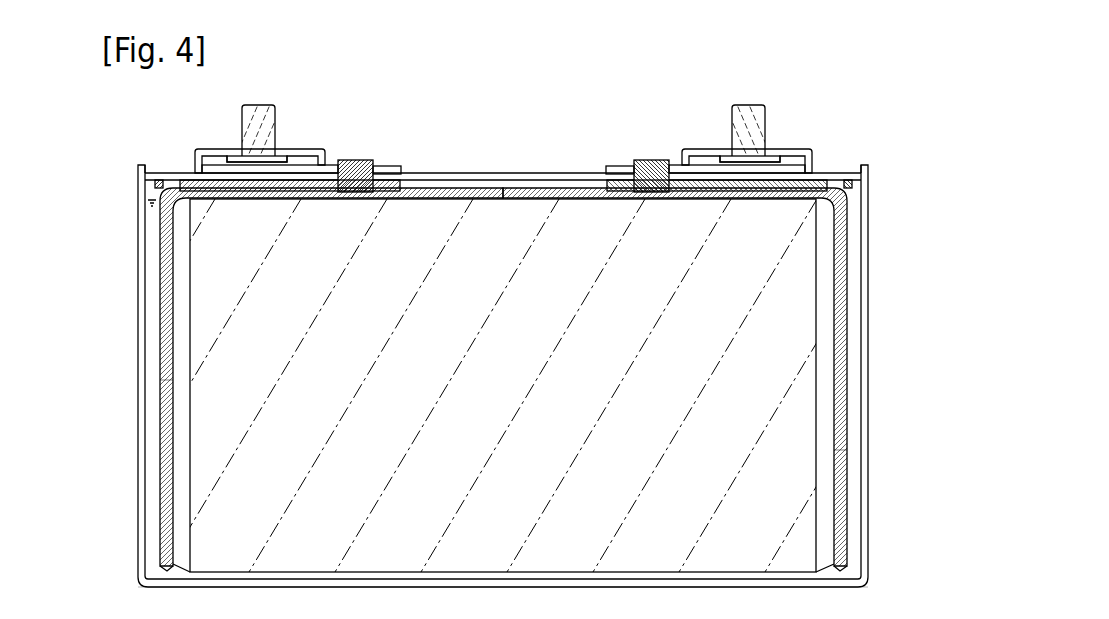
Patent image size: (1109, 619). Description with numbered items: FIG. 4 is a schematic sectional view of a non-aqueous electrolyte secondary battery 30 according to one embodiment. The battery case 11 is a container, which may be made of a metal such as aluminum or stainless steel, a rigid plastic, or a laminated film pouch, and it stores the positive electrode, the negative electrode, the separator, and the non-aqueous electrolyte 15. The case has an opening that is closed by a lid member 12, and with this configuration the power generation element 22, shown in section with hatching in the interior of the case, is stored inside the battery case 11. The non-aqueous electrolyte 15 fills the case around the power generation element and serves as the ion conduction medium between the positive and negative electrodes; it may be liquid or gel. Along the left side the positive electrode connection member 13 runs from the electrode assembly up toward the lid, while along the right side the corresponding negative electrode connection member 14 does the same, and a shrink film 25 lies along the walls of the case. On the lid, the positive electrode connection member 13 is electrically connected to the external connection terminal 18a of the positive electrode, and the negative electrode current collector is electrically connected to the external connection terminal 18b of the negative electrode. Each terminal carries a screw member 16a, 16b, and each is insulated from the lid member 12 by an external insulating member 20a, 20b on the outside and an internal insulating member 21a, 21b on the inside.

The non-aqueous electrolyte secondary battery 30 is at (884, 127).
The battery case 11 is at (864, 350).
The lid member 12 is at (474, 175).
The positive electrode connection member 13 is at (170, 300).
The insulating sheet (right) 14 is at (838, 298).
The non-aqueous electrolyte 15 is at (146, 220).
The power generation element 22 is at (790, 410).
The shrink film 25 is at (166, 372).
The screw member 16a is at (253, 140).
The screw member 16b is at (762, 133).
The external connection terminal 18a is at (290, 150).
The external connection terminal 18b is at (718, 150).
The external insulating member 20a is at (312, 172).
The external insulating member 20b is at (690, 175).
The internal insulating member 21a is at (397, 165).
The internal insulating member 21b is at (603, 177).